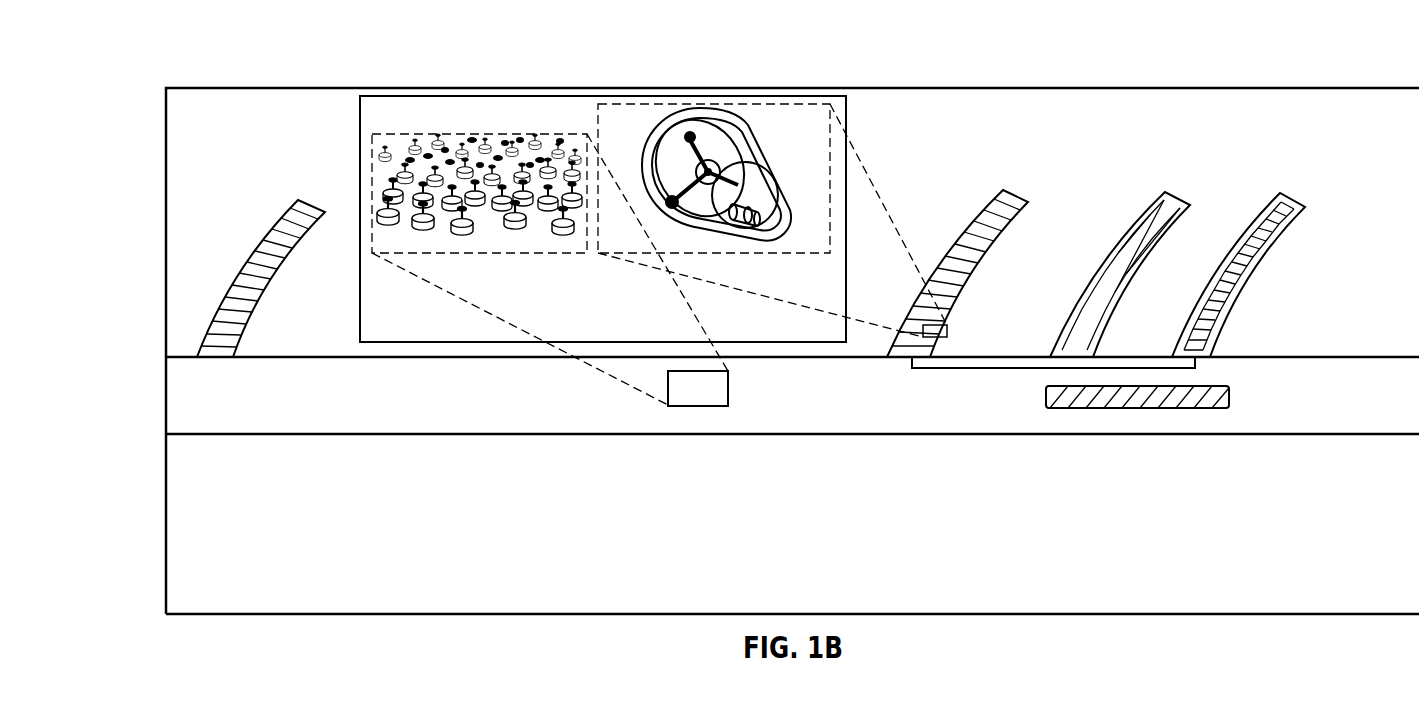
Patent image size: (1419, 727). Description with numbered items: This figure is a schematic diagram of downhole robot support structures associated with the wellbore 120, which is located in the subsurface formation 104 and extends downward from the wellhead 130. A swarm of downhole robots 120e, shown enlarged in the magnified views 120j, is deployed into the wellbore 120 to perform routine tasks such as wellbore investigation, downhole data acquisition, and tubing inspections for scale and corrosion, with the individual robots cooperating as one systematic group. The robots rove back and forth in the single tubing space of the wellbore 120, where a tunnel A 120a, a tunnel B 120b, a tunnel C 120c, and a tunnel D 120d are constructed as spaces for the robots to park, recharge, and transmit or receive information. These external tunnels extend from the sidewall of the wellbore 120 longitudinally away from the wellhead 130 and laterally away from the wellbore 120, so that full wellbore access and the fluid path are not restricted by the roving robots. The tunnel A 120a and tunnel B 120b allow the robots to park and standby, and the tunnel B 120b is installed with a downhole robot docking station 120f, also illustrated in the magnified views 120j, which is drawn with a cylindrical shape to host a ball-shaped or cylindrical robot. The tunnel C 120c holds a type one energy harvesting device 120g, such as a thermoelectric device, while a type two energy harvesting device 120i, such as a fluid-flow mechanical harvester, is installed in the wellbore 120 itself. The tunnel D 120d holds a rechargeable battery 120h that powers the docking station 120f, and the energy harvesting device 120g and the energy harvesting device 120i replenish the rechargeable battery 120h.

The subsurface formation 104 is at (792, 571).
The wellbore 120 is at (792, 395).
The wellhead 130 is at (175, 386).
The tunnel A 120a is at (292, 226).
The tunnel B 120b is at (1021, 198).
The tunnel C 120c is at (1113, 274).
The tunnel D 120d is at (1274, 275).
The swarm of downhole robots 120e is at (692, 406).
The downhole robot docking station 120f is at (947, 330).
The energy harvesting device 120g is at (1130, 285).
The rechargeable battery 120h is at (1275, 225).
The energy harvesting device 120i is at (1135, 408).
The magnified views 120j is at (558, 96).